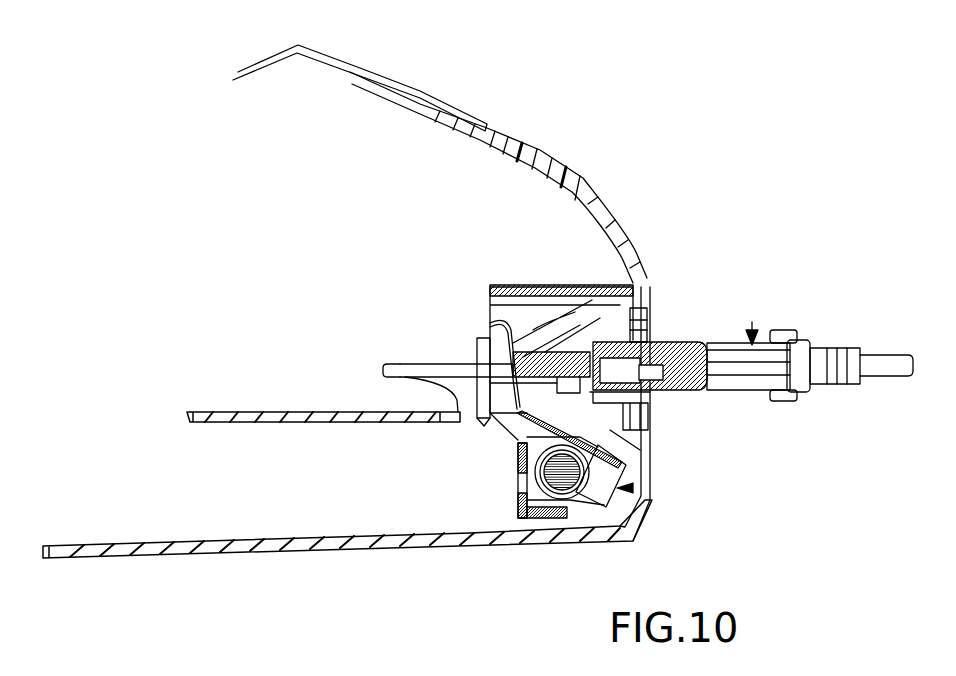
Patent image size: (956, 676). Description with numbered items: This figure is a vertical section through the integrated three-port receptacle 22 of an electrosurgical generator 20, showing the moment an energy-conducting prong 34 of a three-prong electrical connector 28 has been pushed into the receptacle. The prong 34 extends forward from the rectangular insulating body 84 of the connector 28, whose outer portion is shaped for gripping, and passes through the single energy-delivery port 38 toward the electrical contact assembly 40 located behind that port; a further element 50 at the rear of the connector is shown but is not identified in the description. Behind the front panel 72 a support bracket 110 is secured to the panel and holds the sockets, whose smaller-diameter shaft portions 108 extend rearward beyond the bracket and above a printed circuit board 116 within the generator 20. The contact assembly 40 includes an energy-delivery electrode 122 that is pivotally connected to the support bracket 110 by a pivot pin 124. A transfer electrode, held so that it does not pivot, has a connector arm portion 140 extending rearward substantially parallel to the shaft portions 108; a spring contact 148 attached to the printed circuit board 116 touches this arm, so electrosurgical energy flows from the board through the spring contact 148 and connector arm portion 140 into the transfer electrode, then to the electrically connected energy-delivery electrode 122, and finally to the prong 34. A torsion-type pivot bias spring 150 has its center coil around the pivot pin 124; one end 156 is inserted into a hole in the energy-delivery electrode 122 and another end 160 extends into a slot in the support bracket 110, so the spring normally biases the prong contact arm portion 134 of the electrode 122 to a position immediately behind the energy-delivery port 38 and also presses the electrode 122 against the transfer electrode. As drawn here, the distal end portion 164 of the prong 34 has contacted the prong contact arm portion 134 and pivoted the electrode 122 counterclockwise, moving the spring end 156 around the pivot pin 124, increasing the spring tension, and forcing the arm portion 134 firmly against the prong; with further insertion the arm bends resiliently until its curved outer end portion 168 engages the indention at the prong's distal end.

The electrosurgical generator 20 is at (604, 118).
The three-port receptacle 22 is at (430, 457).
The three-prong electrical connector 28 is at (753, 328).
The energy-conducting prong 34 is at (598, 337).
The energy-delivery port 38 is at (647, 395).
The electrical contact assembly 40 is at (650, 492).
The cable 50 is at (878, 357).
The front panel 72 is at (628, 245).
The insulating body 84 is at (742, 383).
The shaft portion 108 is at (402, 372).
The support bracket 110 is at (482, 338).
The printed circuit board 116 is at (190, 413).
The energy-delivery electrode 122 is at (528, 424).
The pivot pin 124 is at (550, 468).
The prong contact arm portion 134 is at (633, 297).
The connector arm portion 140 is at (422, 363).
The spring contact 148 is at (404, 394).
The pivot bias spring 150 is at (540, 492).
The end of the pivot bias spring 156 is at (636, 449).
The another end of the pivot bias spring 160 is at (515, 500).
The distal end portion 164 is at (488, 340).
The curved outer end portion 168 is at (505, 318).